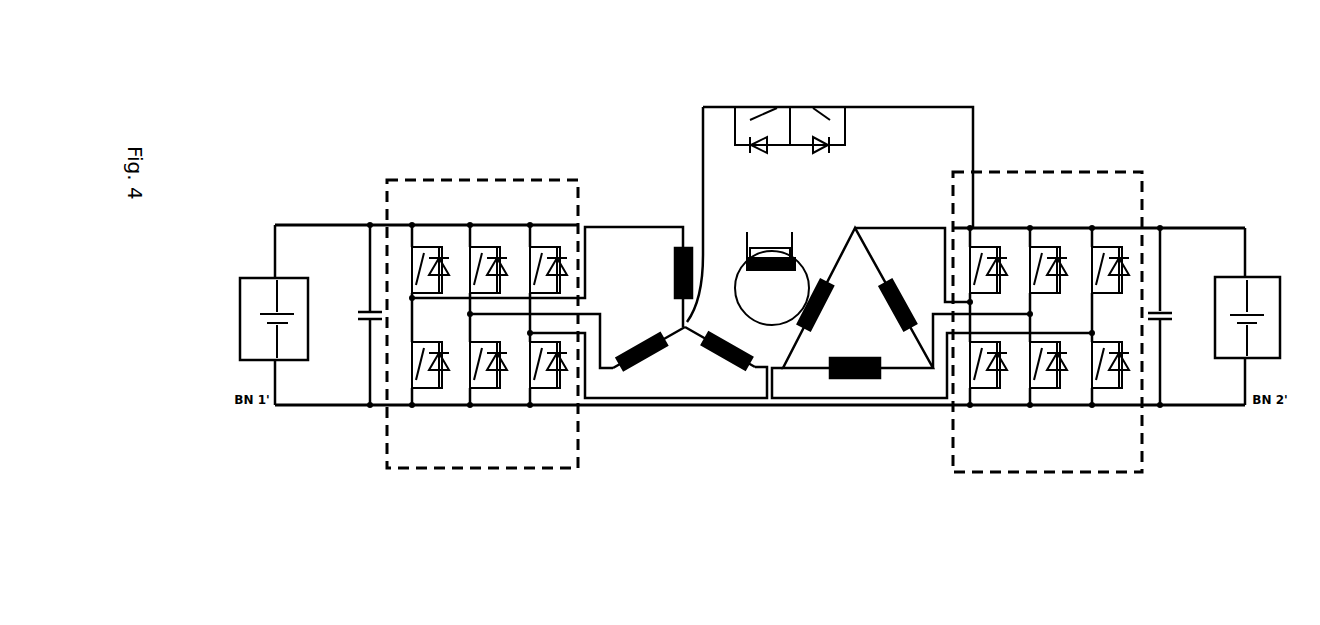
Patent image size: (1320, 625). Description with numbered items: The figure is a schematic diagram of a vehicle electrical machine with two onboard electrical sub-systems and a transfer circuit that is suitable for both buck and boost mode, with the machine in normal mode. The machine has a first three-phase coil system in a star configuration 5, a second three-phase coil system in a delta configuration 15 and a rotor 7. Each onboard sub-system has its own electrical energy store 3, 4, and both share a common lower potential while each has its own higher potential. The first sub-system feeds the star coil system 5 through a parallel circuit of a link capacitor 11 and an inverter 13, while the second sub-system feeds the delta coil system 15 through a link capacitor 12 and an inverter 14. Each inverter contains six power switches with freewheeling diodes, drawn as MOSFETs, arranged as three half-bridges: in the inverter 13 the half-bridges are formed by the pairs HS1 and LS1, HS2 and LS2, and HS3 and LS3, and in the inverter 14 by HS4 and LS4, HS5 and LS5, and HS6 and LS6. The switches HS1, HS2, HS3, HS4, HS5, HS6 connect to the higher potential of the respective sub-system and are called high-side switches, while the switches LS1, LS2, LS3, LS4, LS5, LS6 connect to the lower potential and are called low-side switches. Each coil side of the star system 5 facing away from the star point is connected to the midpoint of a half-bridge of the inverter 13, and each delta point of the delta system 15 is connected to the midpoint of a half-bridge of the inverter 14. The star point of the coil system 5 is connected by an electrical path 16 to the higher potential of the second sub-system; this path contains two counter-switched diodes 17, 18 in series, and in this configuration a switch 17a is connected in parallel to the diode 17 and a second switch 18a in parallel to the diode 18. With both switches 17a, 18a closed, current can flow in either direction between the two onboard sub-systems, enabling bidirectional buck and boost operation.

The electrical energy store 3 is at (300, 262).
The electrical energy store 4 is at (1265, 260).
The first 3-phase coil system in star configuration 5 is at (680, 338).
The rotor 7 is at (768, 250).
The link capacitor 11 is at (362, 318).
The link capacitor 12 is at (1172, 318).
The inverter 13 is at (482, 324).
The inverter 14 is at (1047, 322).
The second 3-phase coil system in delta configuration 15 is at (803, 357).
The electrical path 16 is at (703, 118).
The diode 17 is at (757, 150).
The switch 17a is at (762, 105).
The diode 18 is at (840, 150).
The switch 18a is at (822, 104).
The high-side switch HS1 is at (424, 224).
The high-side switch HS2 is at (484, 224).
The high-side switch HS3 is at (542, 224).
The high-side switch HS4 is at (984, 226).
The high-side switch HS5 is at (1044, 226).
The high-side switch HS6 is at (1104, 226).
The low-side switch LS1 is at (442, 407).
The low-side switch LS2 is at (502, 407).
The low-side switch LS3 is at (560, 407).
The low-side switch LS4 is at (1000, 407).
The low-side switch LS5 is at (1062, 407).
The low-side switch LS6 is at (1122, 407).